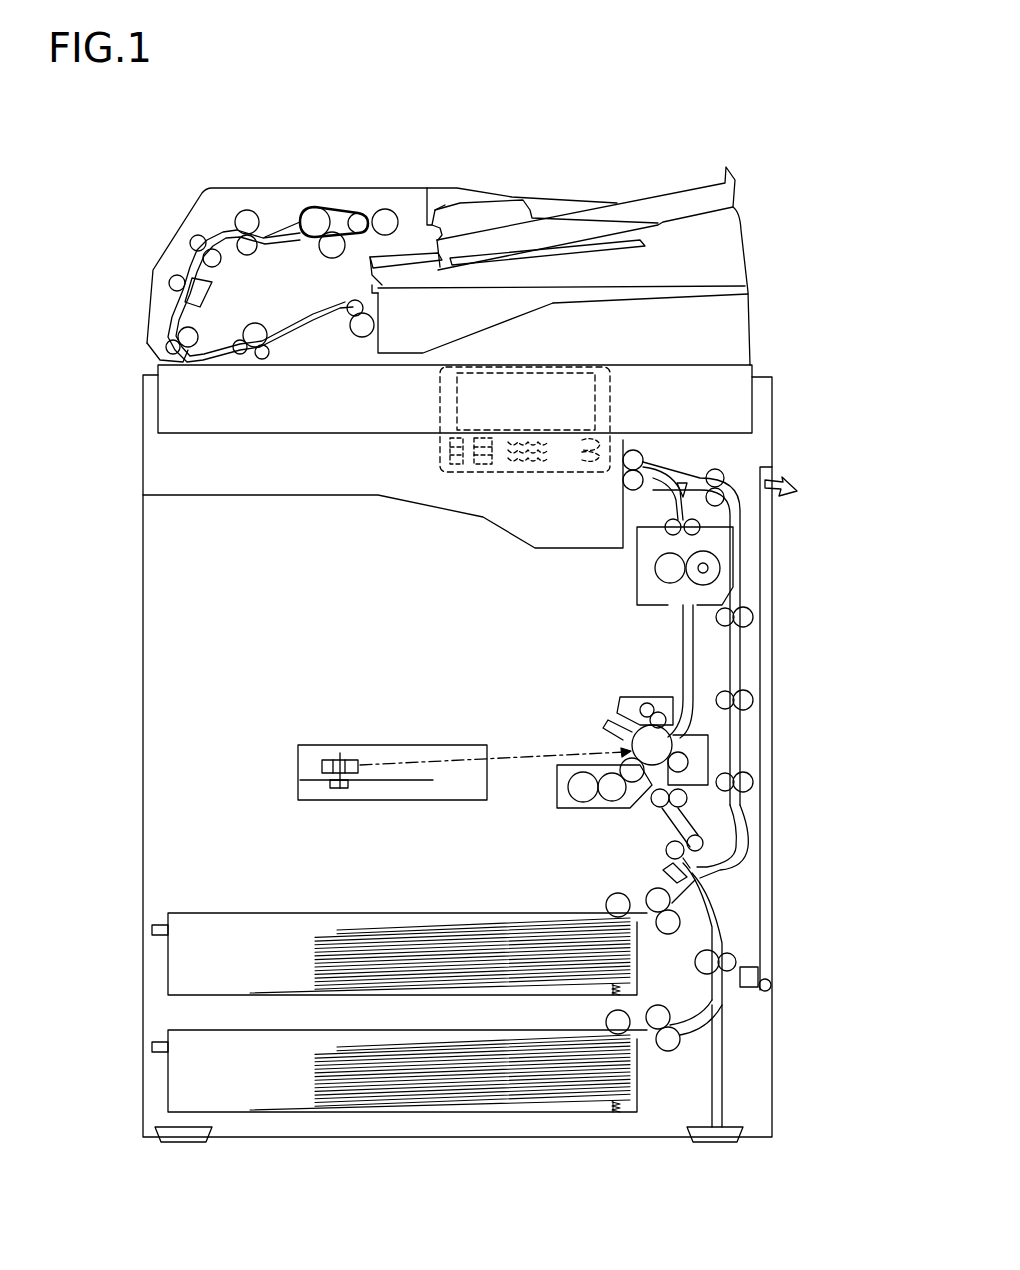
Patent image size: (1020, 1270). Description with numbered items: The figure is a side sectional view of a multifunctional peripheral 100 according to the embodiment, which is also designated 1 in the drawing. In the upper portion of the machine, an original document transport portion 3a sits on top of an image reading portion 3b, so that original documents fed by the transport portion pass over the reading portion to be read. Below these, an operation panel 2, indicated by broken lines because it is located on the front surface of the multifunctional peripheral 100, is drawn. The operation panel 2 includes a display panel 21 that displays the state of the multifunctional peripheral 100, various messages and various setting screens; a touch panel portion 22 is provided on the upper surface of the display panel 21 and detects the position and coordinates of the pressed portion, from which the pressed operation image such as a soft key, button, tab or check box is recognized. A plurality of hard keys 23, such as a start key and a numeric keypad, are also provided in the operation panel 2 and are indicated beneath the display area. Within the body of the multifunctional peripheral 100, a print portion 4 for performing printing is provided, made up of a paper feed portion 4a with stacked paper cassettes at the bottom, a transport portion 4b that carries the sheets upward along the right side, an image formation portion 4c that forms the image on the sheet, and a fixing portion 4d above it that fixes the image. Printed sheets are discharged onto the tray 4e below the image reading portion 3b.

The multifunctional peripheral 100 is at (167, 221).
The image forming apparatus (multifunction peripheral) 1 is at (452, 654).
The original document transport portion 3a is at (752, 315).
The image reading portion 3b is at (753, 402).
The operation panel 2 is at (610, 398).
The display panel 21 is at (567, 390).
The touch panel portion 22 is at (526, 401).
The hard keys 23 is at (602, 483).
The print portion 4 is at (792, 467).
The paper feed portion 4a is at (167, 910).
The transport portion 4b is at (670, 827).
The image formation portion 4c is at (575, 685).
The fixing portion 4d is at (633, 600).
The sheet discharge tray 4e is at (398, 498).